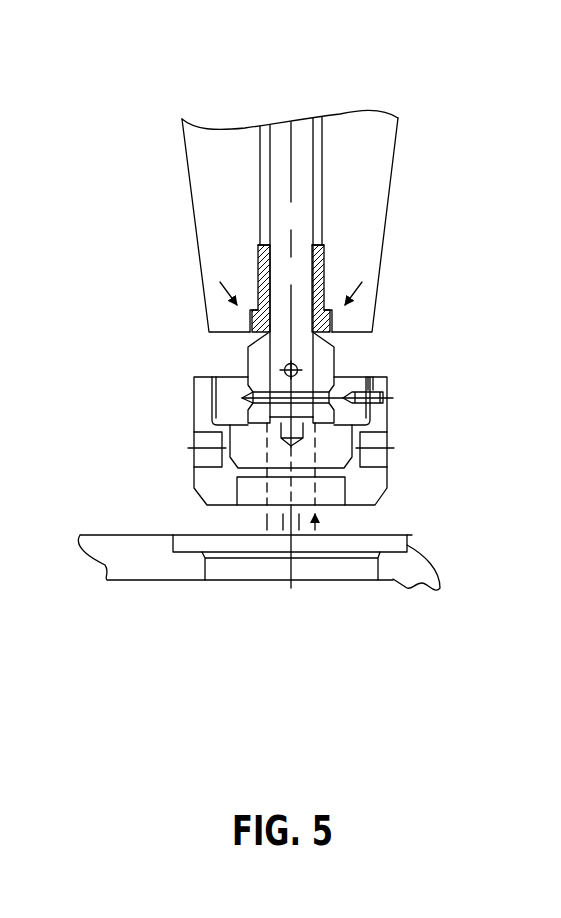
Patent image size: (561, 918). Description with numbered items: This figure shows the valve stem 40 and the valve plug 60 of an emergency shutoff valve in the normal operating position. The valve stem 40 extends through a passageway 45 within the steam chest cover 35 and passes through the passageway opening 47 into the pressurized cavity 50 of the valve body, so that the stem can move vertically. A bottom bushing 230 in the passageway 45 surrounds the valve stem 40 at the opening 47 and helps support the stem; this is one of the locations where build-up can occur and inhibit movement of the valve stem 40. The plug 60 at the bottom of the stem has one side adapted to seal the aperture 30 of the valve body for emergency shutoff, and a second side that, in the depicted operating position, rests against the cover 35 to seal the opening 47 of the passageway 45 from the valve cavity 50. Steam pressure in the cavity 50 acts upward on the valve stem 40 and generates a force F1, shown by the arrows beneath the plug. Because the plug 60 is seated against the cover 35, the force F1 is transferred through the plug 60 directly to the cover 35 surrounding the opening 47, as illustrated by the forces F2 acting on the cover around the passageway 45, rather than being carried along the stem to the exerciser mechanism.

The aperture 30 is at (355, 542).
The steam chest cover 35 is at (423, 570).
The valve stem 40 is at (316, 180).
The passageway 45 is at (291, 210).
The passageway opening 47 is at (325, 335).
The cavity 50 is at (366, 584).
The valve plug 60 is at (327, 363).
The bottom bushing 230 is at (322, 270).
The force F1 is at (252, 518).
The forces F2 is at (225, 295).